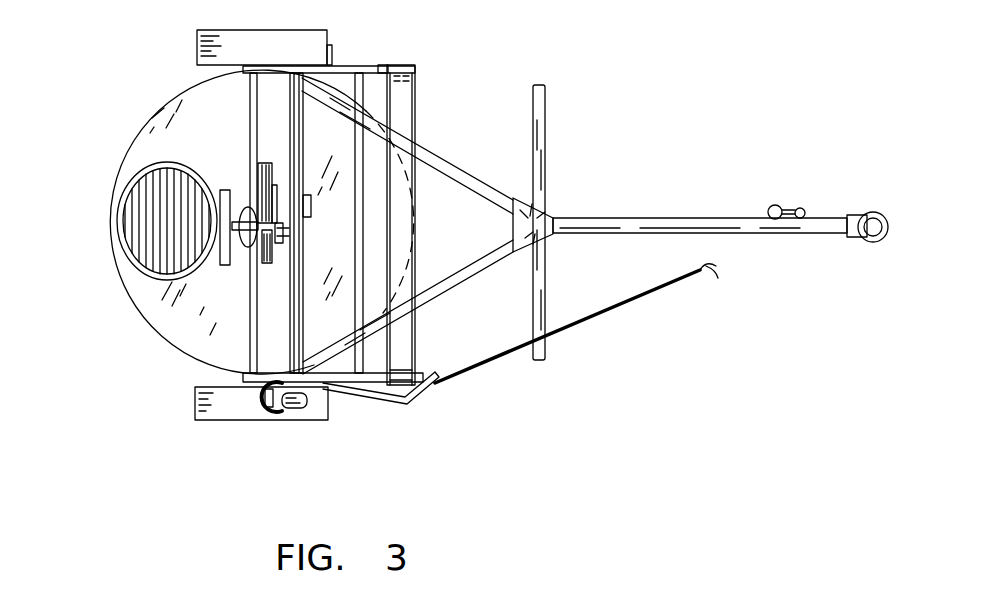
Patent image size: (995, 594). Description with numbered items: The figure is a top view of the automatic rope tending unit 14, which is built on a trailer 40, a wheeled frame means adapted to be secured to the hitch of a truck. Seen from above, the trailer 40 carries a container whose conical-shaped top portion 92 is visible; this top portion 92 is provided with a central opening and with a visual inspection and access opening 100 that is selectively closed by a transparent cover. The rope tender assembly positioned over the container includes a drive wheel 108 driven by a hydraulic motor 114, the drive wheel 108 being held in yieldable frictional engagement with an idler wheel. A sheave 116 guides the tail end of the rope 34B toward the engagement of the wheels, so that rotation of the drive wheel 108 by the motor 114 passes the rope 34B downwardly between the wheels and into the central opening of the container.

The automatic rope tending unit 14 is at (583, 117).
The tail end of the rope 34B is at (653, 297).
The trailer 40 is at (685, 218).
The top portion of container 92 is at (180, 137).
The visual inspection and access opening 100 is at (148, 230).
The drive wheel 108 is at (267, 167).
The hydraulic motor 114 is at (305, 200).
The sheave 116 is at (423, 387).